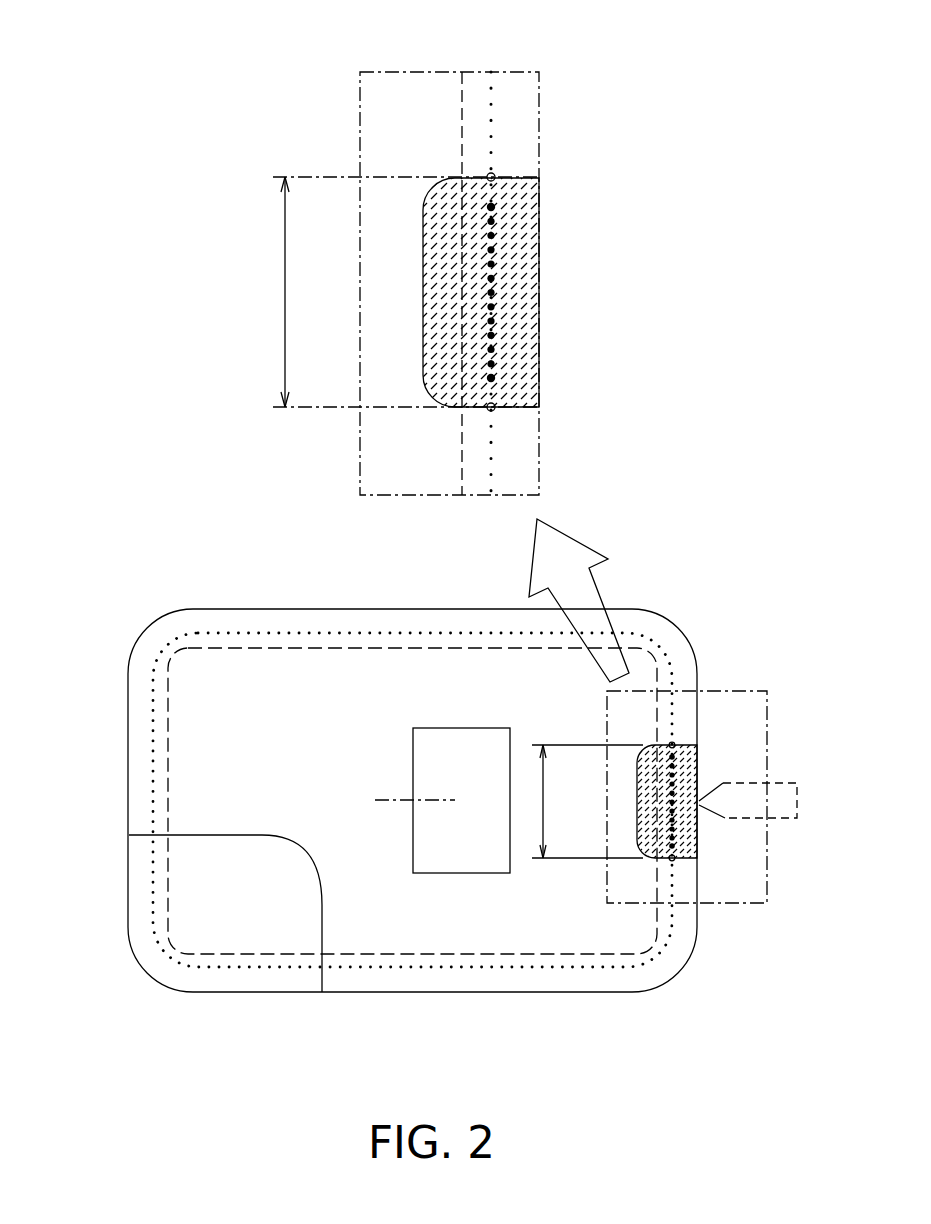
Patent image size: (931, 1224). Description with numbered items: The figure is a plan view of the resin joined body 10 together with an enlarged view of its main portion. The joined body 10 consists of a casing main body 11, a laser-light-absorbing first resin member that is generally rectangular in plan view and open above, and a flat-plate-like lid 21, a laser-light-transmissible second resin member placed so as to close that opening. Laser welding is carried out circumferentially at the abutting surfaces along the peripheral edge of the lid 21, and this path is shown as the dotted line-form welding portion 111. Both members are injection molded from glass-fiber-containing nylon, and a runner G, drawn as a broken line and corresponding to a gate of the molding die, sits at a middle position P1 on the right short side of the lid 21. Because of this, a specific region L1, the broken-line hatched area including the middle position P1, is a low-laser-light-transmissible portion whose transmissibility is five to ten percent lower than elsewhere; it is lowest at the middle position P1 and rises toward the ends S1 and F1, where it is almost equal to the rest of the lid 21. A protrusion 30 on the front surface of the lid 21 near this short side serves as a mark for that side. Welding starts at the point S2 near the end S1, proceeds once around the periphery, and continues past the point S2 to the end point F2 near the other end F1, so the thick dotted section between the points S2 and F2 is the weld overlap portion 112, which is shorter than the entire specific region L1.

The resin joined body 10 is at (183, 593).
The casing main body 11 is at (128, 890).
The lid 21 is at (215, 724).
The protrusion 30 is at (457, 875).
The line-form welding portion 111 is at (491, 88).
The weld overlap portion 112 is at (493, 343).
The middle position P1 is at (522, 293).
The specific region L1 is at (269, 292).
The runner G is at (790, 783).
The other end of specific region F1 is at (495, 174).
The end point F2 is at (488, 204).
The one end of specific region S1 is at (495, 410).
The start point S2 is at (488, 375).